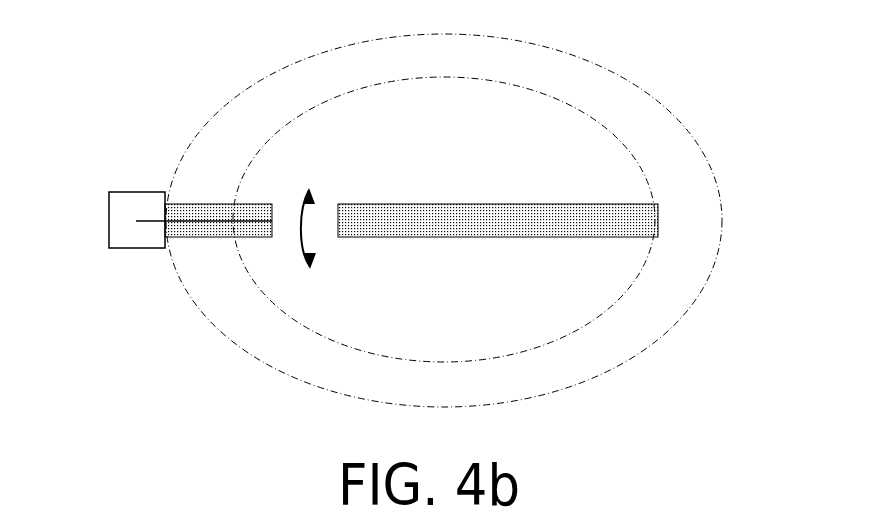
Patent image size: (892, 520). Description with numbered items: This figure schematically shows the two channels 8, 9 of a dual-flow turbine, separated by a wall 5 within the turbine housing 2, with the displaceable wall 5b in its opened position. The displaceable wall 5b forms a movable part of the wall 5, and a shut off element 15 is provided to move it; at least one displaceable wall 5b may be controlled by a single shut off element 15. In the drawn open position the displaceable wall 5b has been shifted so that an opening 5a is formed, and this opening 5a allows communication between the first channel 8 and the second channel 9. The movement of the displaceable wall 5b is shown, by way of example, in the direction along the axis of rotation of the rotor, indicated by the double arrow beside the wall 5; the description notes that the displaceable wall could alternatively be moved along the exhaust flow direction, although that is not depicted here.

The turbine housing 2 is at (248, 117).
The second channel 9 is at (552, 137).
The first channel 8 is at (487, 317).
The shut off element 15 is at (137, 192).
The displaceable wall 5b is at (247, 217).
The opening 5a is at (285, 227).
The wall 5 is at (567, 217).